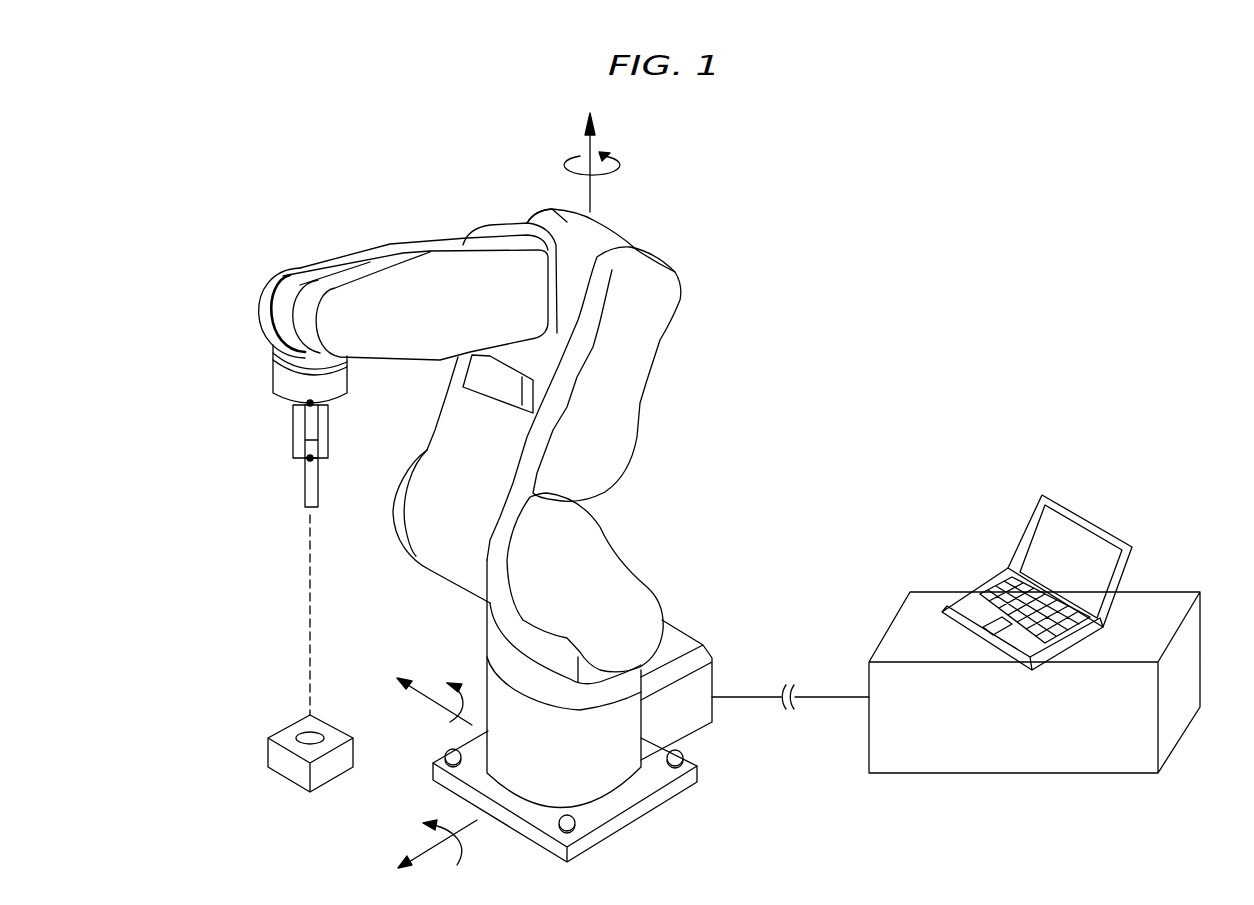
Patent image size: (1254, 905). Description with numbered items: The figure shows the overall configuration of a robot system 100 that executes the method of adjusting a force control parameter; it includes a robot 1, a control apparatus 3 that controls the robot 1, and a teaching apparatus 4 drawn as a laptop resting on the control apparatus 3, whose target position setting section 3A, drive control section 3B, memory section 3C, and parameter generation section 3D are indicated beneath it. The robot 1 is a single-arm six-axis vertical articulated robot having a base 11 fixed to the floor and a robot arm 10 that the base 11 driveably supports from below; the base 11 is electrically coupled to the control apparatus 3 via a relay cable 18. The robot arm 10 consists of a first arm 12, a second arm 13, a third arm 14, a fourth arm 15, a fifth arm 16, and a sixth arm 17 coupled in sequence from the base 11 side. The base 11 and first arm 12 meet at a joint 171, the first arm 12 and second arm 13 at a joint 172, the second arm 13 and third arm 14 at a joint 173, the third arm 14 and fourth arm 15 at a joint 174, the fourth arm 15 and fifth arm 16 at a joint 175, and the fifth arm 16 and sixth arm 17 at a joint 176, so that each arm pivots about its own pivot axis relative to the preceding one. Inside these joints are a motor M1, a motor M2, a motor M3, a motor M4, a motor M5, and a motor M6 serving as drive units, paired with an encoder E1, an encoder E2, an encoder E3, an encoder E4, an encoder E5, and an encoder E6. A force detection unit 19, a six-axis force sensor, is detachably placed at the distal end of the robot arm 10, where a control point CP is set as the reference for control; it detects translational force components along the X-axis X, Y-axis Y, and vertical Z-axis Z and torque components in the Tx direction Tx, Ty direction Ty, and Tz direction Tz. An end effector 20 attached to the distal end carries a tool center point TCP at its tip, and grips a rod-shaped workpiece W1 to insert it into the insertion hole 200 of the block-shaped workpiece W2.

The robot 1 is at (752, 198).
The control apparatus 3 is at (1158, 585).
The target position setting section 3A is at (923, 738).
The drive control section 3B is at (991, 738).
The memory section 3C is at (1059, 738).
The parameter generation section 3D is at (1129, 738).
The teaching apparatus 4 is at (1090, 508).
The robot arm 10 is at (683, 267).
The base 11 is at (563, 780).
The first arm 12 is at (665, 610).
The second arm 13 is at (620, 433).
The third arm 14 is at (598, 218).
The fourth arm 15 is at (463, 270).
The fifth arm 16 is at (283, 274).
The sixth arm 17 is at (270, 360).
The relay cable 18 is at (828, 700).
The force detection unit 19 is at (348, 372).
The end effector 20 is at (292, 428).
The robot system 100 is at (1092, 195).
The joint 171 is at (507, 653).
The joint 172 is at (393, 517).
The joint 173 is at (560, 243).
The joint 174 is at (515, 220).
The joint 175 is at (307, 265).
The joint 176 is at (347, 360).
The insertion hole 200 is at (295, 735).
The control point CP is at (305, 401).
The tool center point TCP is at (305, 462).
The workpiece W1 is at (305, 494).
The workpiece W2 is at (290, 768).
The motor M1 is at (693, 797).
The encoder E1 is at (607, 743).
The motor M2 is at (679, 562).
The encoder E2 is at (593, 587).
The motor M3 is at (677, 463).
The encoder E3 is at (590, 467).
The motor M4 is at (680, 320).
The encoder E4 is at (572, 280).
The motor M5 is at (415, 220).
The encoder E5 is at (443, 300).
The motor M6 is at (197, 293).
The encoder E6 is at (262, 294).
The X-axis X is at (422, 689).
The Y-axis Y is at (428, 849).
The Z-axis Z is at (590, 147).
The Tx direction Tx is at (440, 722).
The Ty direction Ty is at (455, 852).
The Tz direction Tz is at (617, 167).